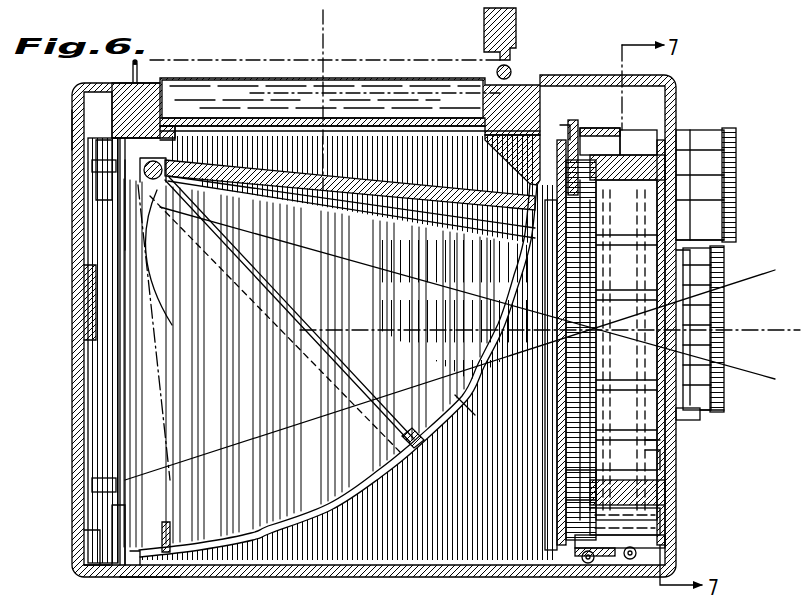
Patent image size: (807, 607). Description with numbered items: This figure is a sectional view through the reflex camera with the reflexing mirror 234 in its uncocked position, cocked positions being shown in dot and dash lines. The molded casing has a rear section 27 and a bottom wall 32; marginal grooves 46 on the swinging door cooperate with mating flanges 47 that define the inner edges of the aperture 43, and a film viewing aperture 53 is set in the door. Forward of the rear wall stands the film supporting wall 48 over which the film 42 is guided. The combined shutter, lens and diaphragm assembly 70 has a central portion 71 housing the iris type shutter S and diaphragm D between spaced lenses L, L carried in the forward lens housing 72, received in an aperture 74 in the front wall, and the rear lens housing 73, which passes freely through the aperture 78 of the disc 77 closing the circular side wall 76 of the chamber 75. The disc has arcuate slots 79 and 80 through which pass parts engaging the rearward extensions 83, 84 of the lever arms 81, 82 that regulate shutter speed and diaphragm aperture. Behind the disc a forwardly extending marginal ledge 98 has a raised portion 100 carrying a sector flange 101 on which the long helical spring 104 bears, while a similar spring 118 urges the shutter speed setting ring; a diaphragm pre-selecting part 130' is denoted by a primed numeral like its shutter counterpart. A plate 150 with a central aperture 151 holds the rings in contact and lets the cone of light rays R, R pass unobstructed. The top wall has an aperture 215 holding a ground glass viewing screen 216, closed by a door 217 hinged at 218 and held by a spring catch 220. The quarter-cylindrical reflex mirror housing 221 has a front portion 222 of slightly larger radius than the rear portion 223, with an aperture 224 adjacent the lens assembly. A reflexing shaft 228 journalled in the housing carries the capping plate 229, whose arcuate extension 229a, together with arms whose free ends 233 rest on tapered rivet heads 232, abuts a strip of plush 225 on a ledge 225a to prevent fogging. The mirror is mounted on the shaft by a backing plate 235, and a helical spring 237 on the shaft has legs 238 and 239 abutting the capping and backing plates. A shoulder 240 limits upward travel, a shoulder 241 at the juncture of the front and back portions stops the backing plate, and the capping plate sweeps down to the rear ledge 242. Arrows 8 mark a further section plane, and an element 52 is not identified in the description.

The rear section 27 is at (490, 576).
The bottom wall 32 is at (145, 577).
The film 42 is at (113, 365).
The aperture 43 is at (96, 503).
The marginal grooves 46 is at (76, 131).
The mating flanges 47 is at (90, 532).
The film supporting wall 48 is at (96, 566).
The fastener 52 is at (90, 166).
The film viewing aperture 53 is at (80, 322).
The combined shutter, lens and diaphragm assembly 70 is at (724, 368).
The central portion 71 is at (615, 205).
The forward lens housing 72 is at (714, 310).
The rear lens housing 73 is at (556, 383).
The aperture 74 is at (692, 418).
The chamber 75 is at (657, 482).
The circular side wall 76 is at (655, 502).
The disc 77 is at (525, 245).
The aperture 78 is at (556, 440).
The arcuate slot 79 is at (568, 170).
The arcuate slot 80 is at (562, 486).
The lever arm 81 is at (700, 200).
The lever arm 82 is at (680, 470).
The rearward extension 83 is at (678, 160).
The rearward extension 84 is at (680, 442).
The marginal ledge 98 is at (602, 128).
The portion of marginal ledge 100 is at (662, 534).
The sector flange 101 is at (627, 560).
The helical spring 104 is at (652, 548).
The helical spring 118 is at (588, 563).
The knurled knob 130' is at (753, 165).
The plate 150 is at (520, 246).
The central aperture 151 is at (556, 420).
The aperture 215 is at (362, 85).
The ground glass viewing screen 216 is at (426, 118).
The door 217 is at (513, 33).
The hinge 218 is at (512, 70).
The spring catch 220 is at (140, 60).
The reflex mirror housing 221 is at (335, 518).
The front portion 222 is at (347, 372).
The rear portion 223 is at (216, 553).
The aperture 224 is at (462, 414).
The strip of plush 225 is at (146, 164).
The ledge 225a is at (125, 228).
The reflexing shaft 228 is at (118, 176).
The capping plate 229 is at (160, 366).
The arcuate extension 229a is at (164, 114).
The tapered heads 232 is at (162, 166).
The free ends 233 is at (268, 100).
The reflexing mirror 234 is at (453, 195).
The backing plate 235 is at (437, 205).
The helical spring 237 is at (142, 240).
The leg 238 is at (189, 257).
The leg 239 is at (243, 165).
The shoulder 240 is at (530, 197).
The shoulder 241 is at (406, 446).
The rear ledge 242 is at (172, 537).
The lens L is at (500, 303).
The light rays R is at (456, 343).
The iris type shutter S is at (712, 260).
The iris type diaphragm D is at (626, 350).
The section line 8- 8 is at (100, 192).